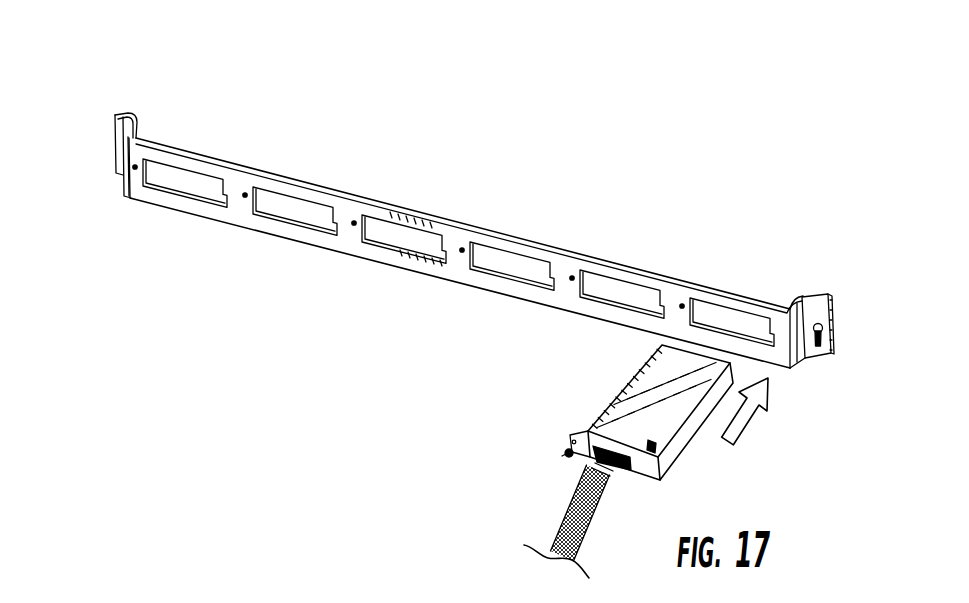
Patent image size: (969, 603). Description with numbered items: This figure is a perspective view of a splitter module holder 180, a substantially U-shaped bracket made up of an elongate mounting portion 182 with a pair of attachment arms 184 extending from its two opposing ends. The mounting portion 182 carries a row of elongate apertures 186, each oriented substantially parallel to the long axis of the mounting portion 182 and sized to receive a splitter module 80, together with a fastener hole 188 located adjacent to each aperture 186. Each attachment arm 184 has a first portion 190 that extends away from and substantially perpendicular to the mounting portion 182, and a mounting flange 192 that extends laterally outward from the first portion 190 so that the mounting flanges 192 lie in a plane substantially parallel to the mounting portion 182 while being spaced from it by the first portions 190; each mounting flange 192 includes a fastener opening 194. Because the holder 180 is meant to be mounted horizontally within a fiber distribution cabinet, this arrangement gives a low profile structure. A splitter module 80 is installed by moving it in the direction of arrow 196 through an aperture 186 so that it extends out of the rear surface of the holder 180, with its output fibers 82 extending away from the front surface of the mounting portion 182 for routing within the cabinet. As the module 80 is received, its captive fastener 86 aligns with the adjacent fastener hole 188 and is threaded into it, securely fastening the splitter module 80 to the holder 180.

The splitter module 80 is at (687, 433).
The output fibers 82 is at (593, 500).
The captive fastener 86 is at (562, 458).
The splitter module holder 180 is at (541, 124).
The mounting portion 182 is at (457, 238).
The attachment arm 184 is at (151, 114).
The aperture 186 is at (402, 238).
The fastener hole 188 is at (682, 306).
The first portion 190 is at (138, 137).
The mounting flange 192 is at (122, 130).
The fastener opening 194 is at (820, 352).
The arrow 196 is at (745, 418).